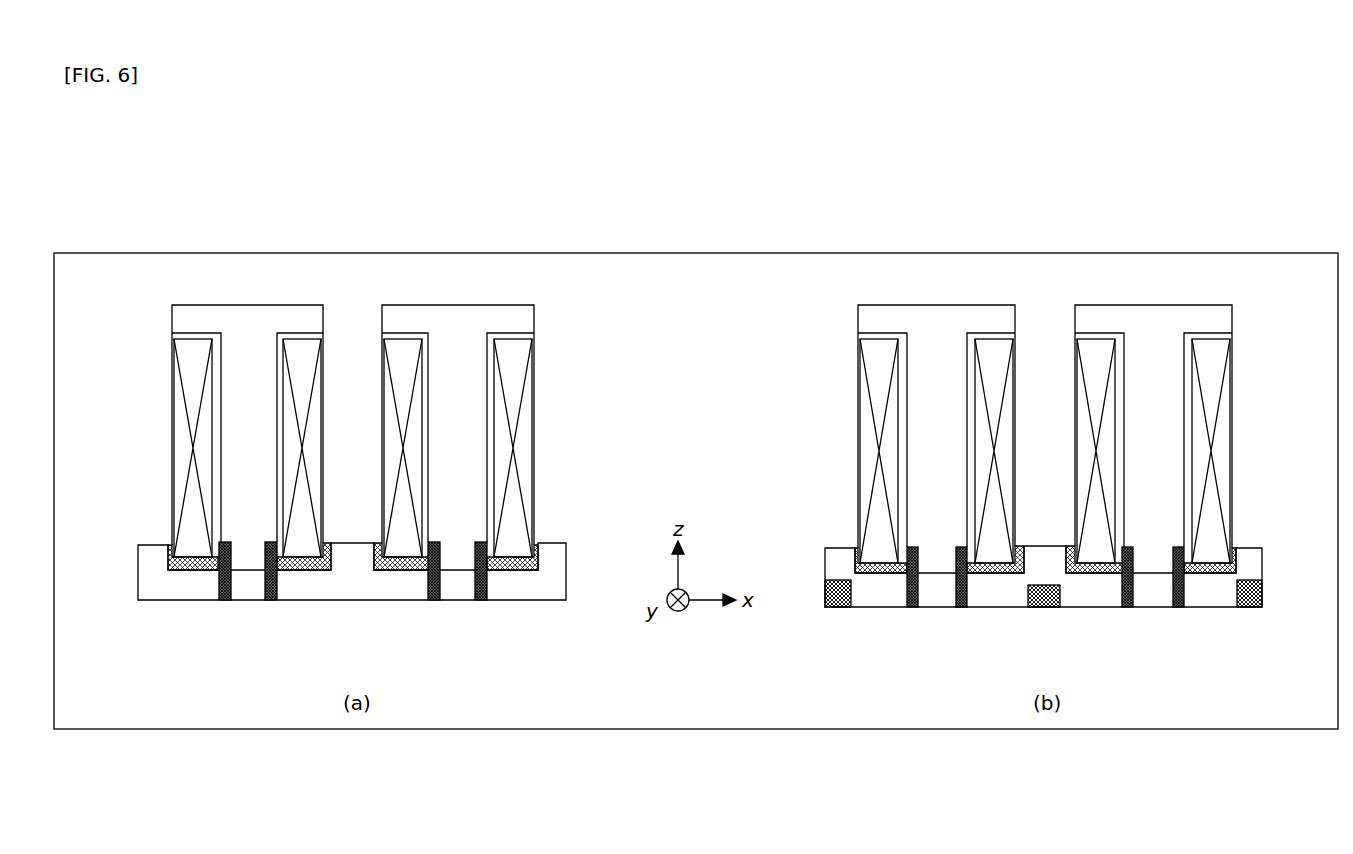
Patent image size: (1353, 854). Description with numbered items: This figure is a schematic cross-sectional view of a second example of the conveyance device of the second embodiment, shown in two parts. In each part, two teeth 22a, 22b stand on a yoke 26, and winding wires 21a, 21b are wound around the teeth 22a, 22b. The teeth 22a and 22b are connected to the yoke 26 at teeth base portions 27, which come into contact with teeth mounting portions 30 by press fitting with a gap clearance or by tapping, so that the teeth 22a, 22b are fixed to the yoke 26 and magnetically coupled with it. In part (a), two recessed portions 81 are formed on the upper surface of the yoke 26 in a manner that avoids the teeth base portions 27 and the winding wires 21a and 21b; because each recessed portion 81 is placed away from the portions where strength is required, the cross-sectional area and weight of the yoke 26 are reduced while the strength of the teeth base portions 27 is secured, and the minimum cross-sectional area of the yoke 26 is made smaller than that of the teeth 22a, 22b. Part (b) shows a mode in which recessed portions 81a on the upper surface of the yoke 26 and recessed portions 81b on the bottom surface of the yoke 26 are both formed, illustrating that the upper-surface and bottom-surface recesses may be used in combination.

The tooth 22a is at (172, 320).
The tooth 22b is at (534, 320).
The winding wire 21a is at (174, 385).
The winding wire 21b is at (384, 472).
The yoke 26 is at (342, 600).
The teeth base portion 27 is at (225, 601).
The teeth mounting portion 30 is at (263, 577).
The recessed portion 81 is at (168, 560).
The recessed portion 81a is at (858, 565).
The recessed portion 81b is at (835, 592).